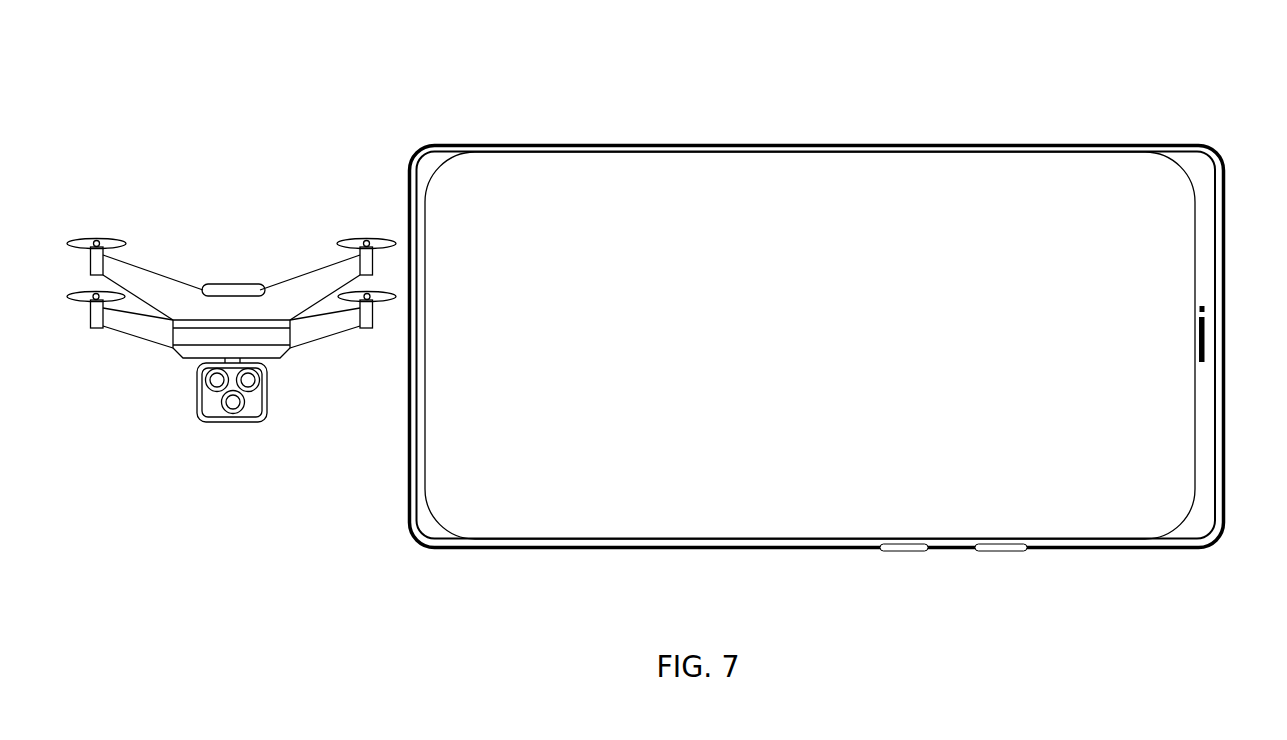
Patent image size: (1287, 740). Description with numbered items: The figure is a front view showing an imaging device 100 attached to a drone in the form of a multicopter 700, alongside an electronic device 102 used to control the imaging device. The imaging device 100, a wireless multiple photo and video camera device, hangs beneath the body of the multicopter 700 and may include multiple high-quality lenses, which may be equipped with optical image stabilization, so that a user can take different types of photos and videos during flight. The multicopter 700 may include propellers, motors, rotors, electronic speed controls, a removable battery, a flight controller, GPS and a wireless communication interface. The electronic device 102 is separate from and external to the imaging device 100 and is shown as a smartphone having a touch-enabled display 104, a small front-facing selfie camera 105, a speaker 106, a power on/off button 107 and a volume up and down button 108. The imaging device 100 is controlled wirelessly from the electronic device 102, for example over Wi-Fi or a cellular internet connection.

The multicopter 700 is at (222, 199).
The imaging device 100 is at (245, 420).
The electronic device 102 is at (431, 130).
The touch-enabled display 104 is at (563, 321).
The front-facing camera 105 is at (1209, 288).
The speaker 106 is at (1213, 328).
The power on/off button 107 is at (881, 554).
The volume up and down button 108 is at (1006, 554).